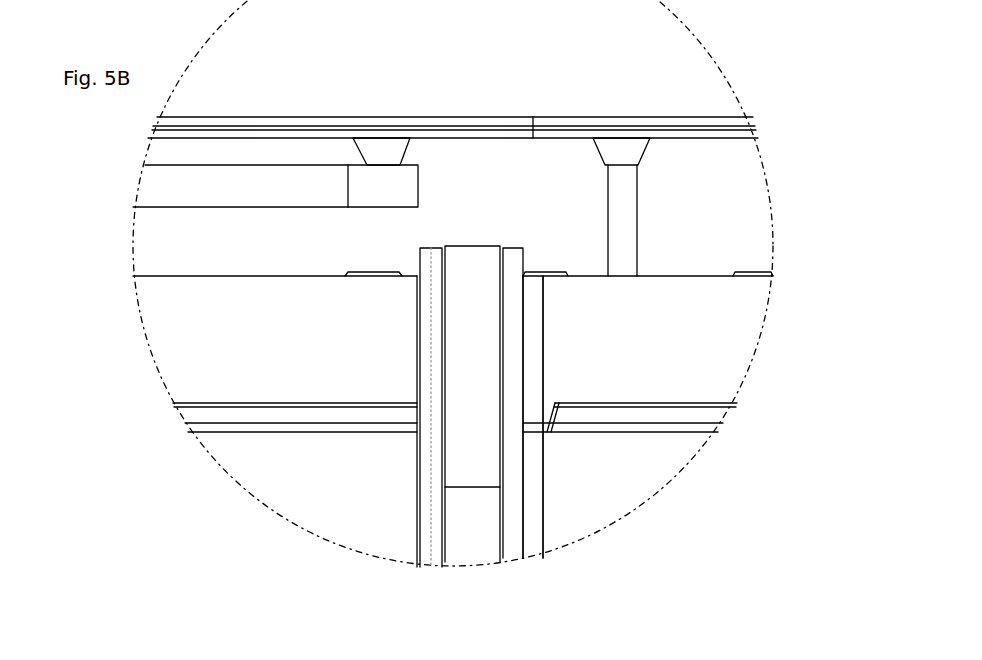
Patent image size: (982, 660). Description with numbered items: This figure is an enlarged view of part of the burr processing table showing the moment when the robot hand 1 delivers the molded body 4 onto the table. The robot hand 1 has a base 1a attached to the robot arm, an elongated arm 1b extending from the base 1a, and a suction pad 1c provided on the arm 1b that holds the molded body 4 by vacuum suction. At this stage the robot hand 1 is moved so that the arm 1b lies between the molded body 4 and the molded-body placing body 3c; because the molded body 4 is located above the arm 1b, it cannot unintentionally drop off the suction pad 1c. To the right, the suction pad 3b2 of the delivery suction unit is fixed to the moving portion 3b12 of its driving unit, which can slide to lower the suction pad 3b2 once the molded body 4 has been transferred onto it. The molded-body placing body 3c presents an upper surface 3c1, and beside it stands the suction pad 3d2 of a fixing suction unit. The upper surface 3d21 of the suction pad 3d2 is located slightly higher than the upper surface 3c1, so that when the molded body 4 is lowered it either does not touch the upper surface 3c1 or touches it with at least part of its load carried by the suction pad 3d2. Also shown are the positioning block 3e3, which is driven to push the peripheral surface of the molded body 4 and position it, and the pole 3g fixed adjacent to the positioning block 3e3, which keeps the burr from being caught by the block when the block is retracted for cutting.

The molded body 4 is at (323, 100).
The robot hand 1 is at (308, 201).
The base 1a is at (308, 198).
The arm 1b is at (408, 186).
The suction pad 1c is at (398, 151).
The molded-body placing body 3c is at (411, 336).
The upper surface 3c1 is at (150, 276).
The suction pad 3b2 is at (633, 153).
The moving portion 3b12 is at (630, 215).
The upper surface 3d21 is at (375, 273).
The suction pad 3d2 is at (390, 262).
The positioning block 3e3 is at (466, 472).
The pole 3g is at (515, 518).